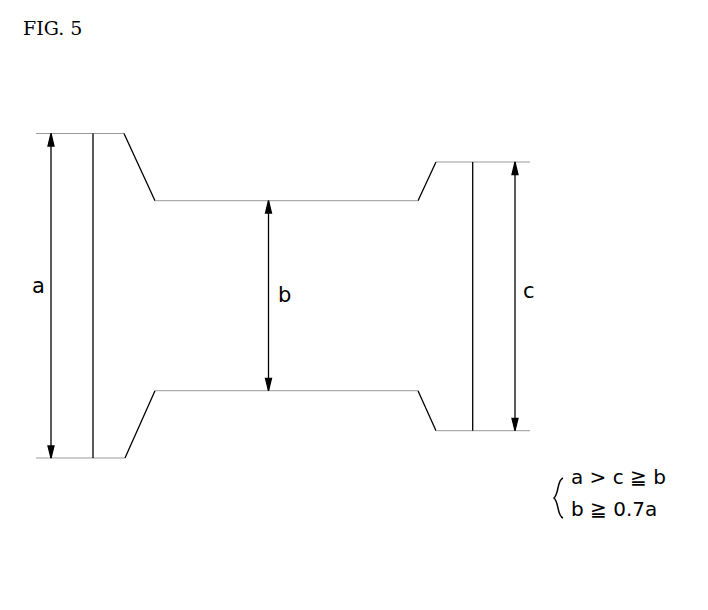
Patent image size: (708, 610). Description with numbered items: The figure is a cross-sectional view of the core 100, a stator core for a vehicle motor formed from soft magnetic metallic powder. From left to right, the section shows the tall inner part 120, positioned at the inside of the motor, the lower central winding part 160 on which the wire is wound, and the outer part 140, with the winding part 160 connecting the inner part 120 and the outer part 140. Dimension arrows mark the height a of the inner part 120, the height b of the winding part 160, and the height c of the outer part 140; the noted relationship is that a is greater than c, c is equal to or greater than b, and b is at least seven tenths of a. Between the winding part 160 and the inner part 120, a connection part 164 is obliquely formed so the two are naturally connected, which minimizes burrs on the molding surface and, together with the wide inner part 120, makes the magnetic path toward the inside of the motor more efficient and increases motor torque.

The core 100 is at (283, 322).
The inner part 120 is at (112, 445).
The outer part 140 is at (454, 422).
The winding part 160 is at (350, 377).
The connection part 164 is at (141, 424).